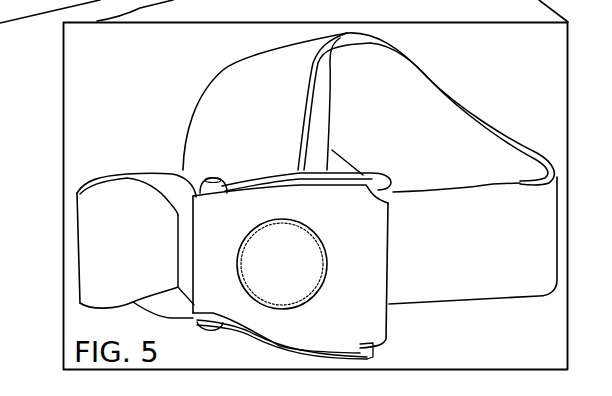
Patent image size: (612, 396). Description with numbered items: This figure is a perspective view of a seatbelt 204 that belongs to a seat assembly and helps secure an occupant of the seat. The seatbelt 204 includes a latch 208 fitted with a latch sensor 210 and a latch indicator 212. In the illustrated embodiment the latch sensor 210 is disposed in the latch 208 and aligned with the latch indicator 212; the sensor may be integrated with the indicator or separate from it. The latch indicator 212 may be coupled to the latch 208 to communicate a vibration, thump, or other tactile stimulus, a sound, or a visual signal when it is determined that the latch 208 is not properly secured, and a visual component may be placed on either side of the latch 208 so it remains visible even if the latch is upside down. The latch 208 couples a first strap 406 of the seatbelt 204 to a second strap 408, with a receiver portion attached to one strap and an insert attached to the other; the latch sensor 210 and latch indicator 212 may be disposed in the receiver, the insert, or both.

The seatbelt 204 is at (63, 99).
The latch 208 is at (386, 181).
The latch sensor 210 is at (250, 243).
The latch indicator 212 is at (316, 236).
The first strap 406 is at (118, 175).
The second strap 408 is at (434, 304).